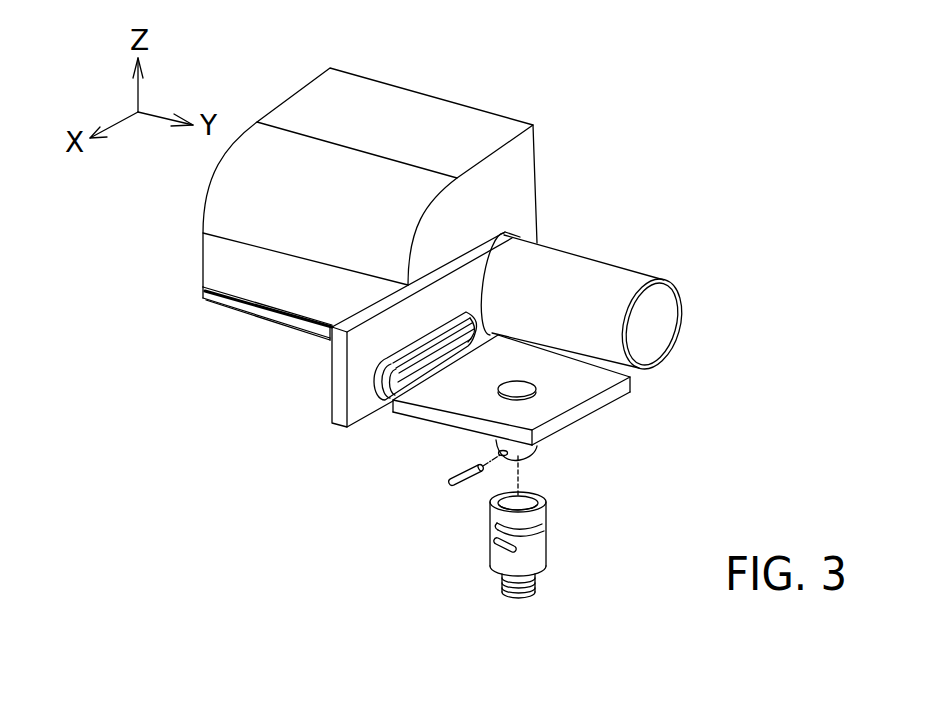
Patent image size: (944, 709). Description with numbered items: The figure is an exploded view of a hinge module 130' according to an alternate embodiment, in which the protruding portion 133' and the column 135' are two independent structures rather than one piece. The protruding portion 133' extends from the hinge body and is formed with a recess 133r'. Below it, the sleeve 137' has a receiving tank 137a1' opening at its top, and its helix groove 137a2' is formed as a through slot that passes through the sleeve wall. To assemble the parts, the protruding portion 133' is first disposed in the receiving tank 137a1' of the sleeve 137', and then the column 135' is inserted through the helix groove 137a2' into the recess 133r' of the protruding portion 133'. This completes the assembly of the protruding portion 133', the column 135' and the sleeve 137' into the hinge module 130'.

The hinge module 130' is at (532, 244).
The protruding portion 133' is at (566, 458).
The recess 133r' is at (462, 466).
The column 135' is at (457, 491).
The sleeve 137' is at (528, 536).
The receiving tank 137a1' is at (582, 500).
The helix groove 137a2' is at (467, 558).